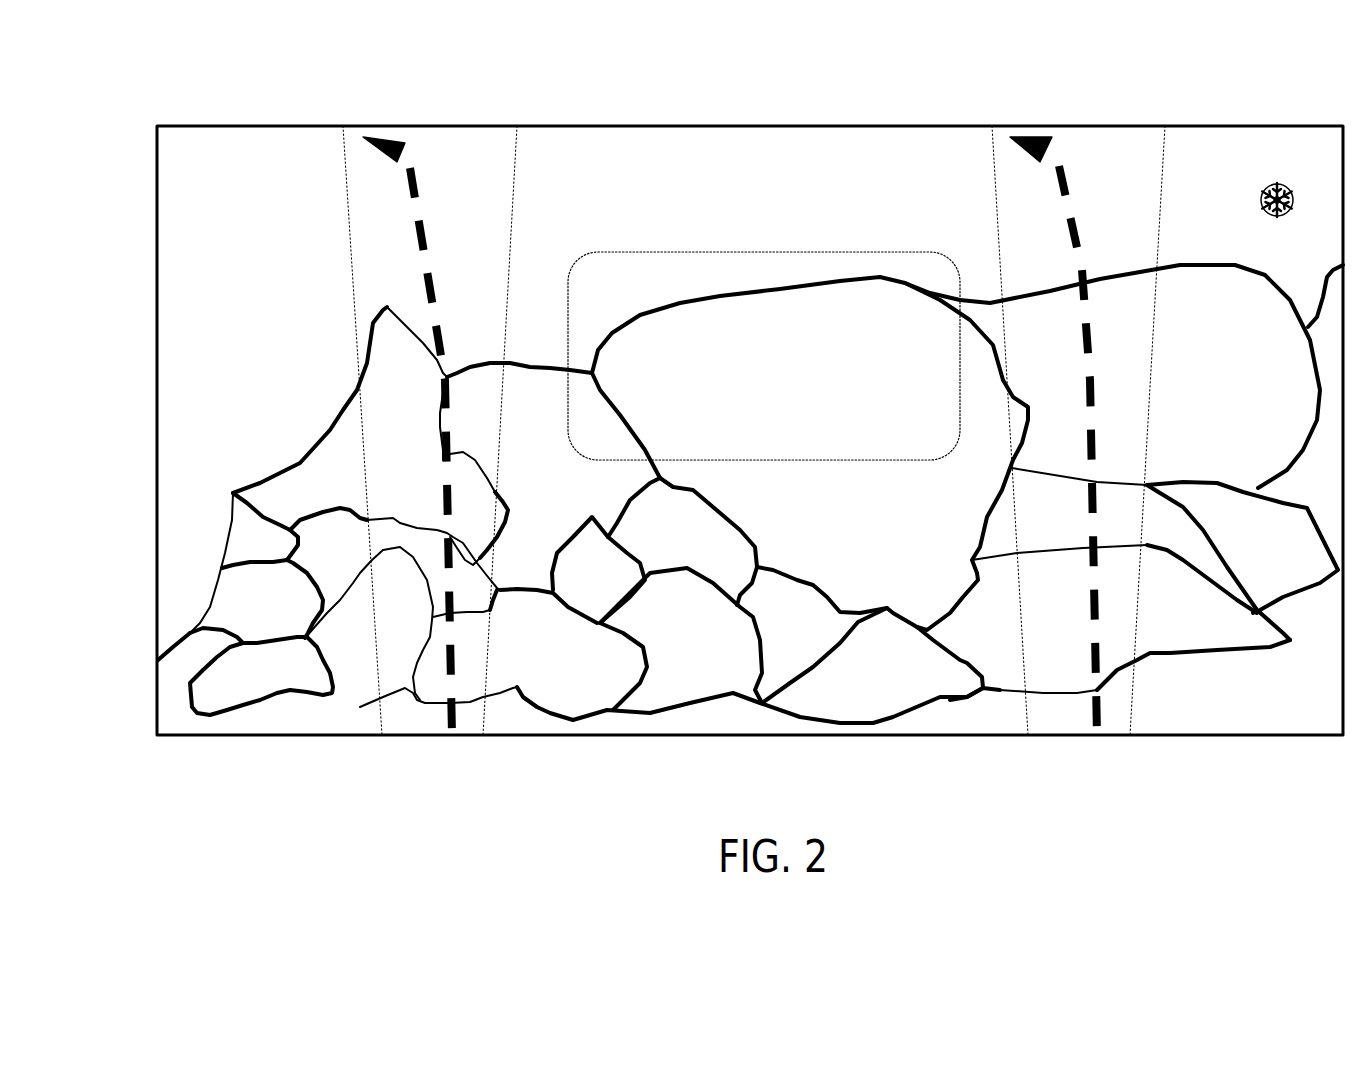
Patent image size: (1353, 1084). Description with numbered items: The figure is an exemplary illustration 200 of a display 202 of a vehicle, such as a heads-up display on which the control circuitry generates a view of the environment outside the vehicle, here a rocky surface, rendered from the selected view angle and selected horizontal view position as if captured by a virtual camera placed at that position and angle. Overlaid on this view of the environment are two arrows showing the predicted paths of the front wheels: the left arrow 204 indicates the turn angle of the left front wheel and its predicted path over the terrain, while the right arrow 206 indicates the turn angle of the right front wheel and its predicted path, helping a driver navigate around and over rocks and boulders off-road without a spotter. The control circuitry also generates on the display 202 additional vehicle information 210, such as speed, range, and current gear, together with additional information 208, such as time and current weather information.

The illustration 200 is at (235, 24).
The display 202 is at (723, 123).
The left arrow 204 is at (438, 220).
The right arrow 206 is at (1083, 235).
The additional information 208 is at (1208, 222).
The additional vehicle information 210 is at (768, 252).